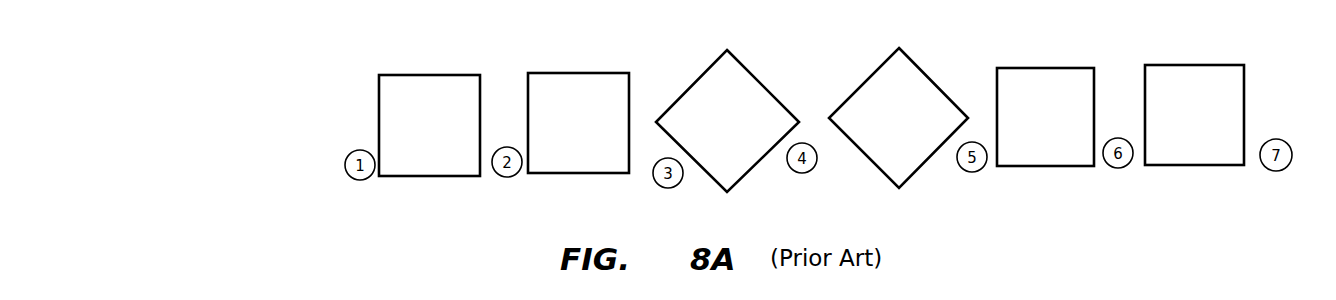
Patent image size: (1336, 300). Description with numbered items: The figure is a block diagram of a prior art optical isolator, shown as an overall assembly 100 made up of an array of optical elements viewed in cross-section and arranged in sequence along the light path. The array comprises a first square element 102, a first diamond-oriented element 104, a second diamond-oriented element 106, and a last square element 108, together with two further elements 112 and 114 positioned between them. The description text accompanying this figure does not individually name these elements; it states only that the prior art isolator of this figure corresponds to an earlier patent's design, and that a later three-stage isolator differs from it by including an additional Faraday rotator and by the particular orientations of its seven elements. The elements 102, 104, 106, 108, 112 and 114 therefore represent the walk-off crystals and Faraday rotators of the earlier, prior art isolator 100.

The prior art polarization rotator optical system 100 is at (280, 94).
The first square optical element 102 is at (385, 74).
The first diamond-oriented optical element 104 is at (753, 75).
The second diamond-oriented optical element 106 is at (858, 89).
The last square optical element 108 is at (1192, 166).
The first frequency-shifting element fr=-45±df 112 is at (577, 174).
The second frequency-shifting element fr=-45±df 114 is at (1028, 167).